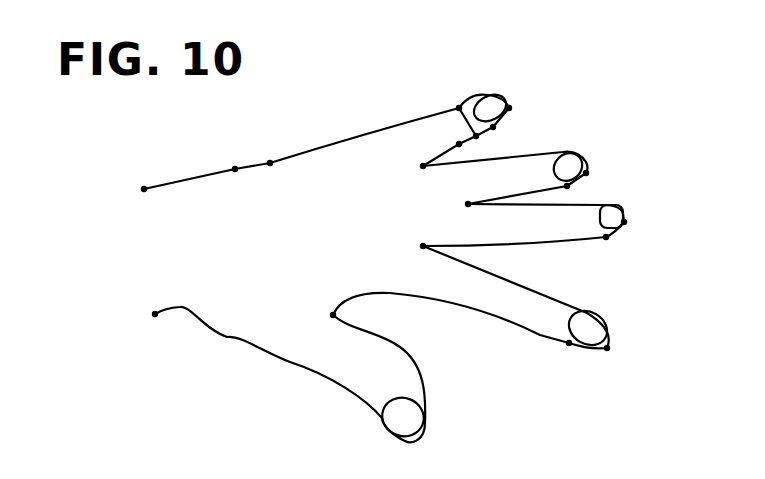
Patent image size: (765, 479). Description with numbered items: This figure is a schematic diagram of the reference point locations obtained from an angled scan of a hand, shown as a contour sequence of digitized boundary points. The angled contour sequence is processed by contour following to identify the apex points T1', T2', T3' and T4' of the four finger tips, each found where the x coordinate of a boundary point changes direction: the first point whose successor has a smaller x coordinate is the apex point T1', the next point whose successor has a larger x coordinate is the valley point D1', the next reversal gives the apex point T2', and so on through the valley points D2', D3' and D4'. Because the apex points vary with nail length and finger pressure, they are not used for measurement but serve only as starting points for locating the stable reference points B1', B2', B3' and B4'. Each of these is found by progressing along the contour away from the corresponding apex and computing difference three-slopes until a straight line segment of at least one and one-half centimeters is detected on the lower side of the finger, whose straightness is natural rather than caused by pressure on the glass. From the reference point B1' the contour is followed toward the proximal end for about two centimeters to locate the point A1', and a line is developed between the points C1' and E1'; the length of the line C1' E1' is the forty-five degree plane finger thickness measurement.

The finger thickness reference point E1' is at (453, 98).
The finger thickness reference point A1' is at (444, 141).
The finger thickness reference point C1' is at (480, 148).
The first finger reference point B1' is at (513, 131).
The first finger apex point T1' is at (527, 106).
The first valley point D1' is at (402, 168).
The second valley point D2' is at (447, 208).
The second finger reference point B2' is at (584, 197).
The second finger apex point T2' is at (603, 175).
The third valley point D3' is at (404, 248).
The third finger reference point B3' is at (617, 248).
The third finger apex point T3' is at (640, 225).
The fourth valley point D4' is at (316, 308).
The fourth finger reference point B4' is at (570, 356).
The fourth finger apex point T4' is at (620, 359).